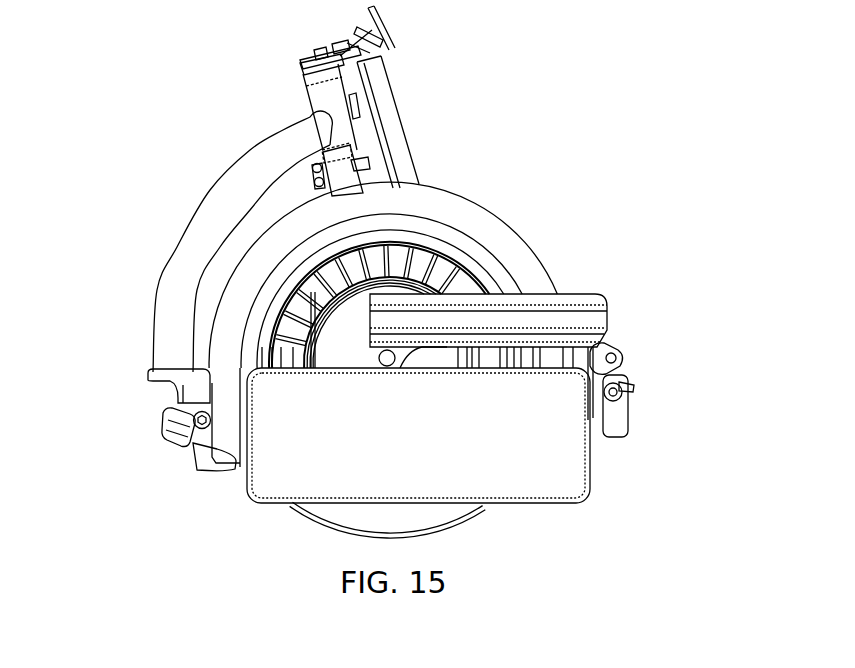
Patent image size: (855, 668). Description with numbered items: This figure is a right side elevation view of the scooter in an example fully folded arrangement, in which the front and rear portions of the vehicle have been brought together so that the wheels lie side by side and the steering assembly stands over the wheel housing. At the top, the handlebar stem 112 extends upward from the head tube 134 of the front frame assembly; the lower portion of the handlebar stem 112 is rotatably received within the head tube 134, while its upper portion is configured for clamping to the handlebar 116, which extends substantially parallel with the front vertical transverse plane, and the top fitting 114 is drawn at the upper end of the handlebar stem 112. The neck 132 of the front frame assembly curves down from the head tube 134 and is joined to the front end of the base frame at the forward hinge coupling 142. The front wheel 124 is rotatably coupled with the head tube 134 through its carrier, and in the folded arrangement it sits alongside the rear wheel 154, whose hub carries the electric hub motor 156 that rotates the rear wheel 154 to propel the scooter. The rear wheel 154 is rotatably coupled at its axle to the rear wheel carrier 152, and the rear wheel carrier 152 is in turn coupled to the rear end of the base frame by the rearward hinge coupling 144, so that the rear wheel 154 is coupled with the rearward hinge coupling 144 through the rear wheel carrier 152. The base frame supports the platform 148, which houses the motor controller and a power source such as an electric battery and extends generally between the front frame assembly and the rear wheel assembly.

The handlebar stem 112 is at (407, 143).
The handlebar attachment 114 is at (357, 57).
The handlebar 116 is at (640, 383).
The front wheel 124 is at (527, 240).
The neck 132 is at (250, 146).
The head tube 134 is at (306, 88).
The forward hinge coupling 142 is at (165, 425).
The rearward hinge coupling 144 is at (622, 394).
The platform 148 is at (250, 473).
The rear wheel carrier 152 is at (607, 312).
The rear wheel 154 is at (262, 235).
The electric hub motor 156 is at (310, 346).